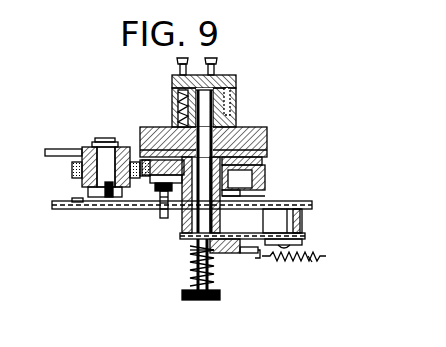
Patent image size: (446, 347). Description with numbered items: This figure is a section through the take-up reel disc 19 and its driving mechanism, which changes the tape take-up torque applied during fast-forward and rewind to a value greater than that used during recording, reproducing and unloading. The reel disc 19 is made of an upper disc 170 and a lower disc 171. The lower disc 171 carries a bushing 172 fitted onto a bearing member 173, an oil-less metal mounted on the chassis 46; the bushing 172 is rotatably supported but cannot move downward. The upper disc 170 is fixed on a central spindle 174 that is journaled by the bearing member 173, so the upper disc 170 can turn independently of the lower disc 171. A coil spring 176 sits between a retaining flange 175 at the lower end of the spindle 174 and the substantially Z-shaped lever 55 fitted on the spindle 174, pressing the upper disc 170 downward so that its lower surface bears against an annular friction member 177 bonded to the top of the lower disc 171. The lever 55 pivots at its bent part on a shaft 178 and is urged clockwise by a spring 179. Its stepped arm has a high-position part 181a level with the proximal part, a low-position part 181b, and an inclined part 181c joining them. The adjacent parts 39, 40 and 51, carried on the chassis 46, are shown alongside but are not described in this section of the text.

The take-up reel disc 19 is at (238, 80).
The upper disc 170 is at (245, 128).
The annular friction member 177 is at (268, 162).
The bushing 172 is at (267, 182).
The lower disc 171 is at (272, 190).
The Z-shaped lever 55 is at (305, 238).
The shaft 178 is at (324, 256).
The spring 179 is at (311, 262).
The high-position part 181a is at (196, 248).
The low-position part 181b is at (258, 260).
The inclined part 181c is at (243, 256).
The coil spring 176 is at (190, 272).
The retaining flange 175 is at (183, 300).
The central spindle 174 is at (190, 286).
The bearing member 173 is at (178, 226).
The rod 39 is at (60, 149).
The bearing unit 40 is at (70, 174).
The chassis 46 is at (55, 209).
The plate 51 is at (80, 210).